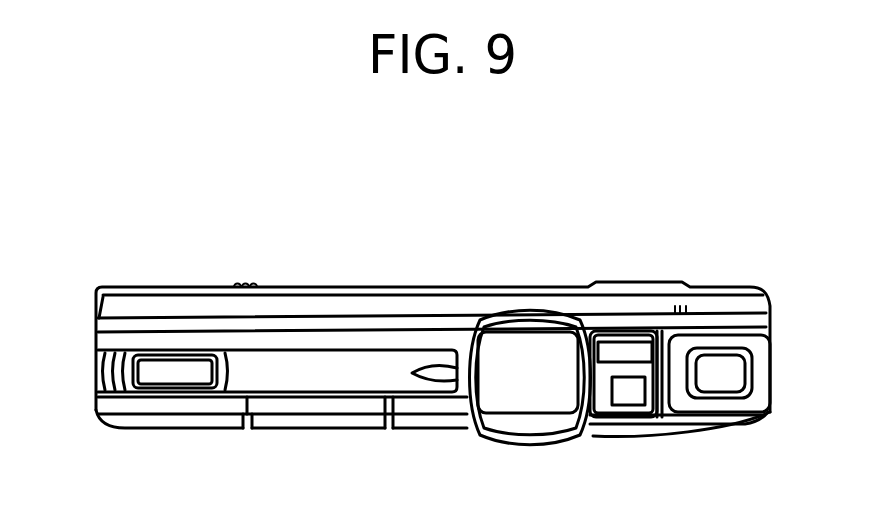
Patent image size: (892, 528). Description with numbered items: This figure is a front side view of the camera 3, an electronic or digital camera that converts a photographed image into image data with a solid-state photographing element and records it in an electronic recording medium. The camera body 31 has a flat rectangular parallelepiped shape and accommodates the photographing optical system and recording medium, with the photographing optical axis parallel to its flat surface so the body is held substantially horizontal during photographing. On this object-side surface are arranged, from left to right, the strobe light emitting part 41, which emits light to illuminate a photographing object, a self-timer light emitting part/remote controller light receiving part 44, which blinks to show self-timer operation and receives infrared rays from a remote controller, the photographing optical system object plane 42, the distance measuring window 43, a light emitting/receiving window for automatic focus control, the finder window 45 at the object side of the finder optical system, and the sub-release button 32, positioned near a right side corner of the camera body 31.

The camera 3 is at (413, 258).
The camera body 31 is at (257, 298).
The sub-release button 32 is at (730, 372).
The strobe light emitting part 41 is at (155, 372).
The photographing optical system object plane 42 is at (547, 340).
The distance measuring window 43 is at (633, 348).
The self-timer light emitting part/remote controller light receiving part 44 is at (430, 378).
The finder window 45 is at (632, 395).